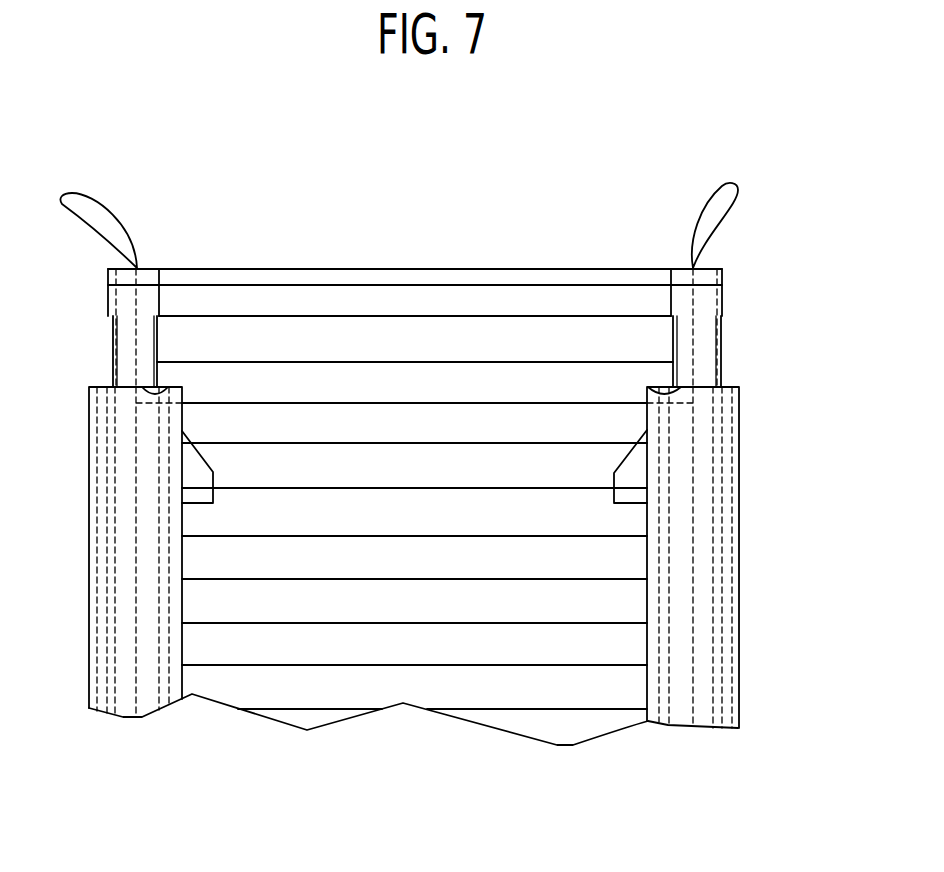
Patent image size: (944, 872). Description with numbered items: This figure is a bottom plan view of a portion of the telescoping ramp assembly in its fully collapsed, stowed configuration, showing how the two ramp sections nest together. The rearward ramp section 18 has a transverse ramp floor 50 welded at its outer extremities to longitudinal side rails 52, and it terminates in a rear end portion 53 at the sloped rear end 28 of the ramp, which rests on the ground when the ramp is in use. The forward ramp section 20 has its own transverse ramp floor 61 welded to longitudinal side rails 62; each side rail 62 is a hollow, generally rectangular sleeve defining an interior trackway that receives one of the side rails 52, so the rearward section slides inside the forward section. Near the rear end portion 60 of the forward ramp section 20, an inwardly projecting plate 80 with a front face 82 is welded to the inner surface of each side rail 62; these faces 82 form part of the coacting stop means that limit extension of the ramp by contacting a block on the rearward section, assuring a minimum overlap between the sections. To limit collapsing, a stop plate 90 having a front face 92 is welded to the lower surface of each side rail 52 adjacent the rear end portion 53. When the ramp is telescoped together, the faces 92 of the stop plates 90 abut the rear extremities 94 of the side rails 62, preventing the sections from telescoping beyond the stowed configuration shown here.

The rearward ramp section 18 is at (752, 320).
The forward ramp section 20 is at (764, 562).
The sloped rear end 28 is at (530, 269).
The transverse ramp floor 50 is at (552, 348).
The longitudinal side rails 52 is at (108, 296).
The rear end portion 53 is at (462, 296).
The rear end portion 60 is at (483, 425).
The transverse ramp floor 61 is at (453, 521).
The longitudinal side rails 62 is at (89, 485).
The inwardly projecting plate 80 is at (200, 476).
The front face 82 is at (203, 505).
The stop plate 90 is at (157, 345).
The front face 92 is at (162, 390).
The rear extremities 94 is at (103, 387).